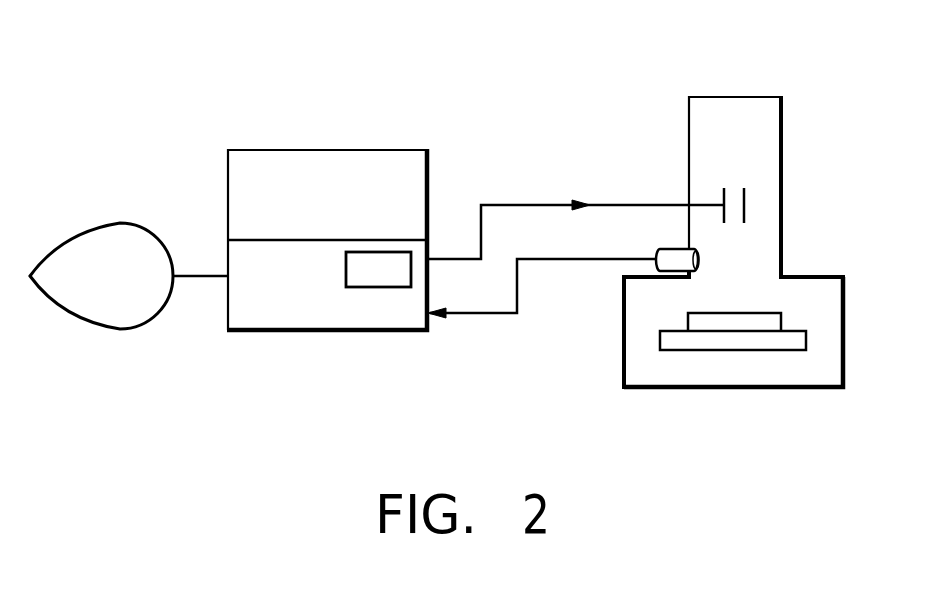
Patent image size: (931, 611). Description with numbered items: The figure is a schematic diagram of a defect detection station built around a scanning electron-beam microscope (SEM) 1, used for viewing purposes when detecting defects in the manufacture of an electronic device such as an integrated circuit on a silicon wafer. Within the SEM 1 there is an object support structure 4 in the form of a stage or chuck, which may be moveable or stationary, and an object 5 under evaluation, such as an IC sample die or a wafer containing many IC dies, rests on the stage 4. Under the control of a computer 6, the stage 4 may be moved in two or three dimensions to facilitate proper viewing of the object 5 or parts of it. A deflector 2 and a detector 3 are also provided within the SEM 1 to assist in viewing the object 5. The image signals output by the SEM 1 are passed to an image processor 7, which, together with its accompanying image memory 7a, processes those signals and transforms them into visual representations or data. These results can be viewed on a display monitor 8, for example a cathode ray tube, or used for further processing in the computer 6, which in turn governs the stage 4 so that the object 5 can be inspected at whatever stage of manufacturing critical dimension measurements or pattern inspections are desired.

The scanning electron-beam microscope 1 is at (731, 112).
The deflector 2 is at (733, 188).
The detector 3 is at (702, 260).
The object support structure 4 is at (769, 342).
The object 5 is at (772, 320).
The computer 6 is at (240, 187).
The image processor 7 is at (230, 263).
The image memory 7a is at (380, 266).
The display monitor 8 is at (125, 312).